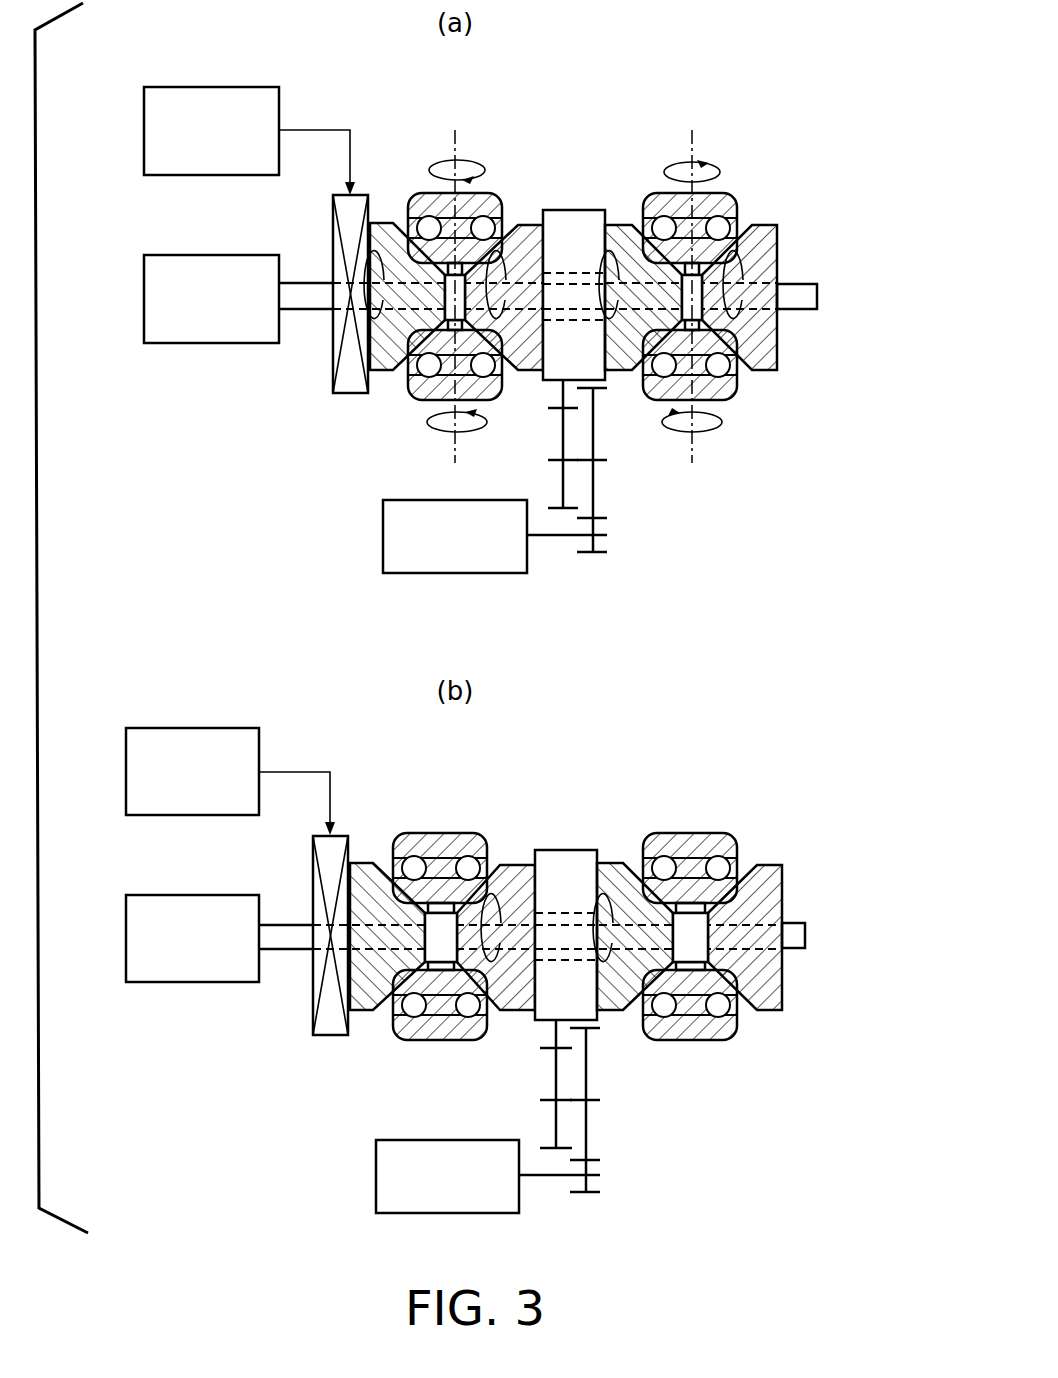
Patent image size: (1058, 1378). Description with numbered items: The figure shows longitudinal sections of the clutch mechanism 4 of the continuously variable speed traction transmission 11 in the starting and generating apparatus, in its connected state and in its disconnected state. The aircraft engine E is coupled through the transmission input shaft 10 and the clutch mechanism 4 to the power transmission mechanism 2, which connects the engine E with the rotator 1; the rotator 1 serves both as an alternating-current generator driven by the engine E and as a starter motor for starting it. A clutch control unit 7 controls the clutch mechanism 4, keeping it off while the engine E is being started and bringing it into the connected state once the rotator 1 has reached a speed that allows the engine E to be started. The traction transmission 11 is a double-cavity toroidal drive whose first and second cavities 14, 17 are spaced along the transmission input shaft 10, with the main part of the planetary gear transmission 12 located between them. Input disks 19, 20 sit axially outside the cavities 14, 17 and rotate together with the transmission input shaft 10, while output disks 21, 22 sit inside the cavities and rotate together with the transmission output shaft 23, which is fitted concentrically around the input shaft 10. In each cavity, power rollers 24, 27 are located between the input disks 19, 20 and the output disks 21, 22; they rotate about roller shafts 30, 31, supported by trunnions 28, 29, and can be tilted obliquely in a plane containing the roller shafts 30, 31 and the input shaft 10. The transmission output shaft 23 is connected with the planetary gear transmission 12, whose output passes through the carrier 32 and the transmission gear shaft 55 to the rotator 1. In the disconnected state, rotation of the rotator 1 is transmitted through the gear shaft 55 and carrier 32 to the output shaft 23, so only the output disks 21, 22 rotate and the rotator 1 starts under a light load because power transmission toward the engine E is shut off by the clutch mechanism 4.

The rotator 1 is at (383, 538).
The power transmission mechanism 2 is at (735, 171).
The clutch mechanism 4 is at (320, 358).
The clutch control unit 7 is at (208, 87).
The transmission input shaft 10 is at (293, 283).
The continuously variable speed traction transmission 11 is at (602, 176).
The planetary gear transmission 12 is at (568, 204).
The first cavity 14 is at (512, 220).
The second cavity 17 is at (747, 219).
The input disk 19 is at (385, 368).
The input disk 20 is at (766, 375).
The output disk 21 is at (527, 362).
The output disk 22 is at (615, 370).
The transmission output shaft 23 is at (573, 270).
The power roller 24 is at (478, 197).
The power roller 27 is at (735, 243).
The trunnion 28 is at (417, 193).
The trunnion 29 is at (730, 192).
The roller shaft 30 is at (457, 137).
The roller shaft 31 is at (697, 140).
The carrier 32 is at (556, 392).
The transmission gear shaft 55 is at (603, 462).
The aircraft engine E is at (218, 255).